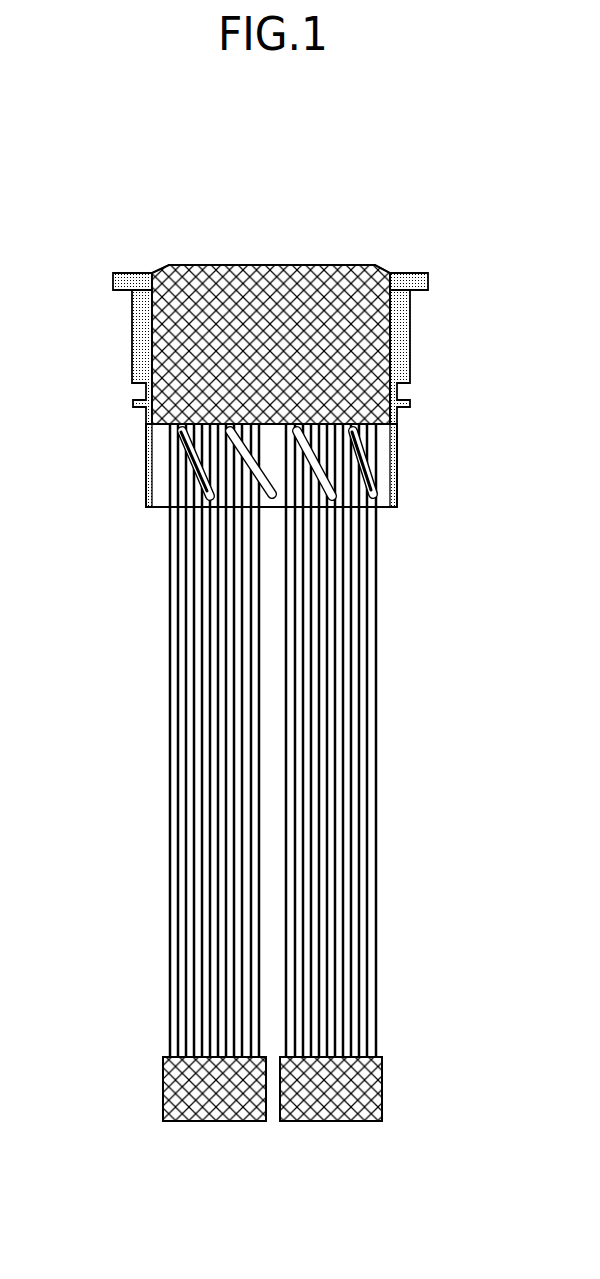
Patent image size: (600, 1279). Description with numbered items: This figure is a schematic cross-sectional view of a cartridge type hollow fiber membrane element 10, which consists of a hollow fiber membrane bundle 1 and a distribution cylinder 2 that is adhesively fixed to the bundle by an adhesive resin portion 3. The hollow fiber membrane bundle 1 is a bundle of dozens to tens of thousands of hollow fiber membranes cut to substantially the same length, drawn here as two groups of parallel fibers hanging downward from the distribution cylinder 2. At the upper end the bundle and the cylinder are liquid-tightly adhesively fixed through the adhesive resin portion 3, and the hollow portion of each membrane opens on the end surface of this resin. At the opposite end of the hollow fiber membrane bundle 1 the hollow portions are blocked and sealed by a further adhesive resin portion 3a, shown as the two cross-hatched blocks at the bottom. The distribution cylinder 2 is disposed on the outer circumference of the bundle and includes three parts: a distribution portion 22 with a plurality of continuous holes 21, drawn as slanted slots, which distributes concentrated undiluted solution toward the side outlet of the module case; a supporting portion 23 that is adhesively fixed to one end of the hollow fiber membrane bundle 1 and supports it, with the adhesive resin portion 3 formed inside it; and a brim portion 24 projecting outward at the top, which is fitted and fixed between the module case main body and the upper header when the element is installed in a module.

The cartridge type hollow fiber membrane element 10 is at (277, 184).
The hollow fiber membrane bundle 1 is at (353, 820).
The distribution cylinder 2 is at (275, 334).
The adhesive resin portion 3 is at (377, 310).
The adhesive resin portion 3a is at (367, 1095).
The continuous holes 21 is at (370, 498).
The distribution portion 22 is at (380, 468).
The supporting portion 23 is at (402, 363).
The brim portion 24 is at (415, 273).